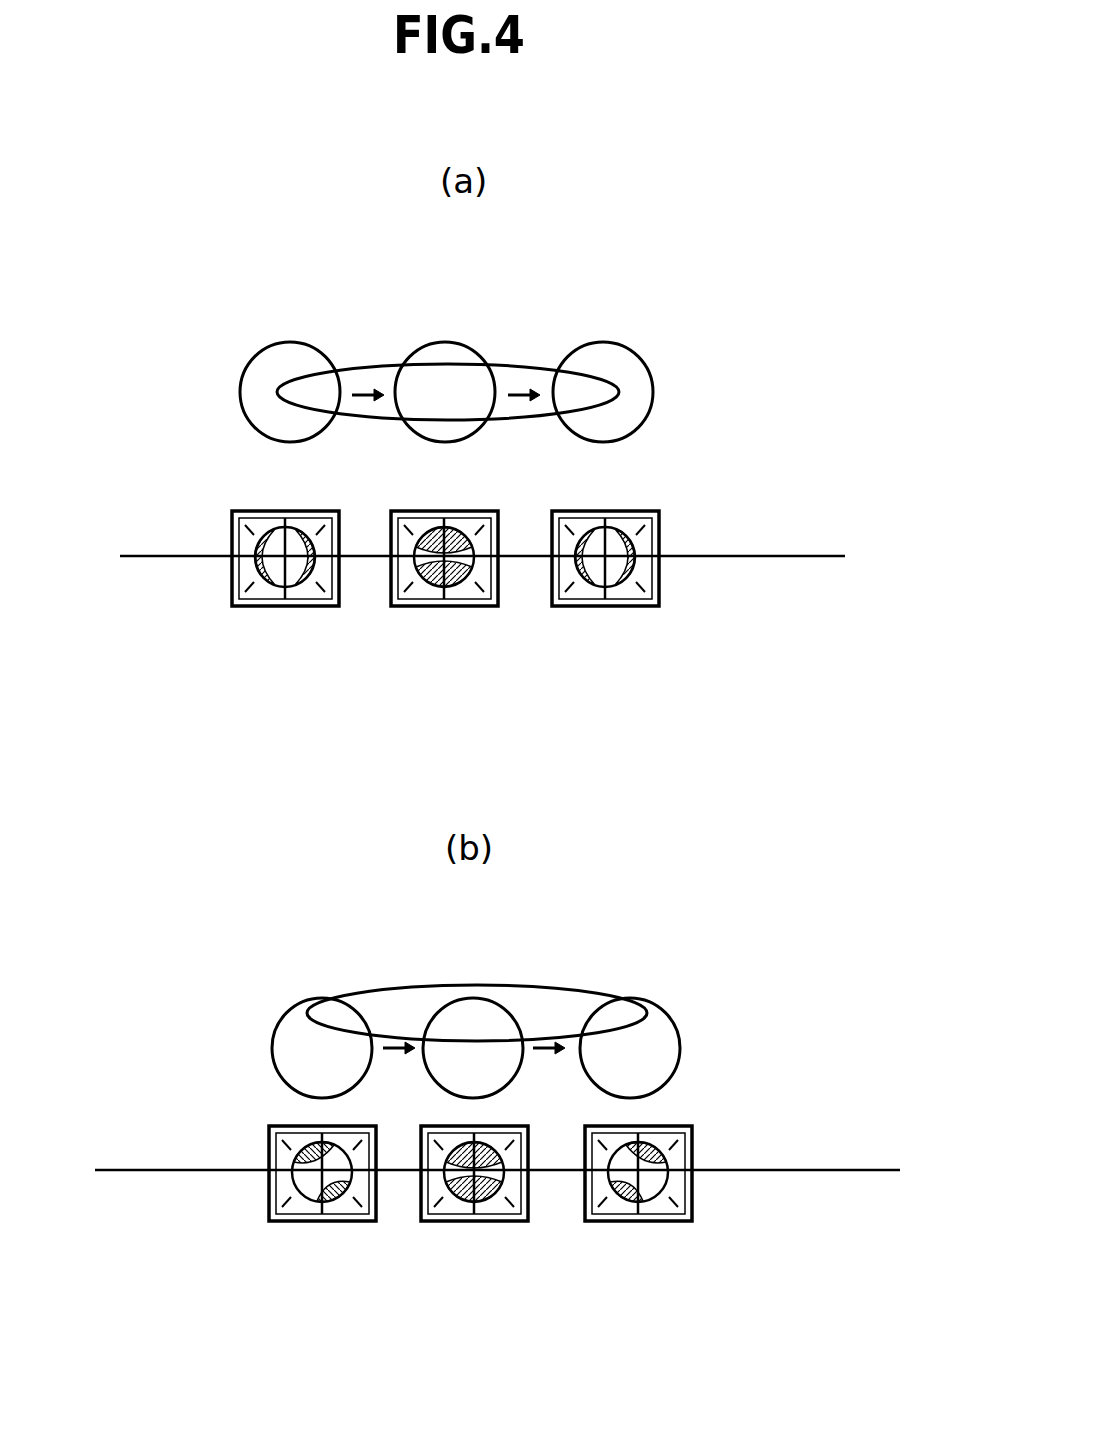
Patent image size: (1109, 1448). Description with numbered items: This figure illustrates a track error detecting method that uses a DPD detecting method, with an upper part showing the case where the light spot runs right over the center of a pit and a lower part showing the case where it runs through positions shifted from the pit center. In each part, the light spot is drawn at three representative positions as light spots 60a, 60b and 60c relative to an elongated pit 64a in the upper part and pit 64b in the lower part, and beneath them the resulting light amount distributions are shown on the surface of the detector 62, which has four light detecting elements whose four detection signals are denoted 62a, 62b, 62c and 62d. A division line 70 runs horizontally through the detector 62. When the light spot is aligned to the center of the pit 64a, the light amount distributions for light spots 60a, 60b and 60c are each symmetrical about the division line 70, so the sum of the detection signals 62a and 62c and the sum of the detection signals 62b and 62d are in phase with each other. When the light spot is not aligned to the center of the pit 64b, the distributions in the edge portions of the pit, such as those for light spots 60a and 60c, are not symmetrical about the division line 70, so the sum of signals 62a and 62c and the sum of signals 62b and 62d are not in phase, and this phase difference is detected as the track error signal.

The light spot 60a is at (307, 345).
The light spot 60b is at (450, 343).
The light spot 60c is at (617, 345).
The pit 64a is at (537, 367).
The pit 64b is at (418, 988).
The detector 62 is at (302, 608).
The detector detection signal 62a is at (247, 512).
The detector detection signal 62b is at (312, 512).
The detector detection signal 62c is at (325, 608).
The detector detection signal 62d is at (242, 608).
The division line 70 is at (775, 555).